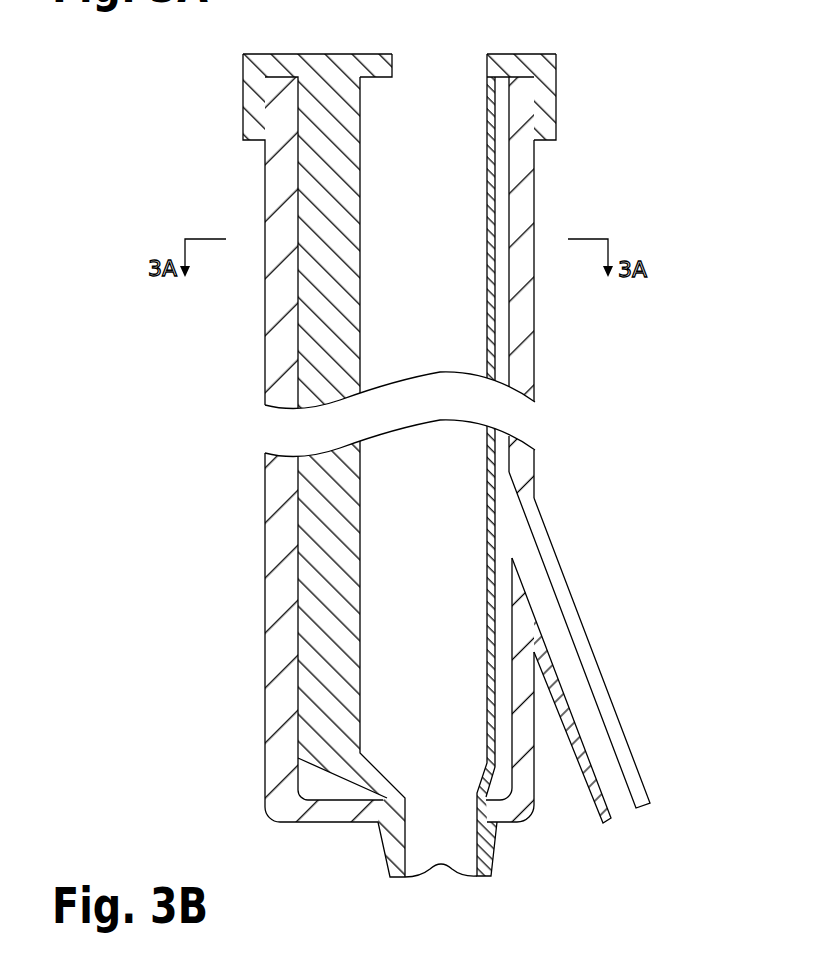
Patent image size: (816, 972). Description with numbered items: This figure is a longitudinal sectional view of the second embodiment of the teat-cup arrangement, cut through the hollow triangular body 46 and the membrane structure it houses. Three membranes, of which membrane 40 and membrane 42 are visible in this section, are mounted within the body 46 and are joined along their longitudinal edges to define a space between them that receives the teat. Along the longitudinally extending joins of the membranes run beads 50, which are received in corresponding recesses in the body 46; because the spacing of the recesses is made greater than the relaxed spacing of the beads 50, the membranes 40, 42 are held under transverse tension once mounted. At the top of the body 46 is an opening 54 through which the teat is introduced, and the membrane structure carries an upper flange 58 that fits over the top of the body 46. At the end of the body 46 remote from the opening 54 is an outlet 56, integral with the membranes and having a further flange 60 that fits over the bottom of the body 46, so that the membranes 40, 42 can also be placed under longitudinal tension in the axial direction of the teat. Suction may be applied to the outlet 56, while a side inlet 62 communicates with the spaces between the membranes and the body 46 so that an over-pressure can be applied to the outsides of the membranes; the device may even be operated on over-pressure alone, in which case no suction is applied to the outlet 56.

The membrane 40 is at (495, 290).
The membrane 42 is at (425, 175).
The hollow triangular body 46 is at (525, 322).
The bead 50 is at (313, 343).
The opening 54 is at (422, 54).
The outlet 56 is at (488, 843).
The upper flange 58 is at (556, 108).
The further flange 60 is at (378, 843).
The inlet 62 is at (603, 737).